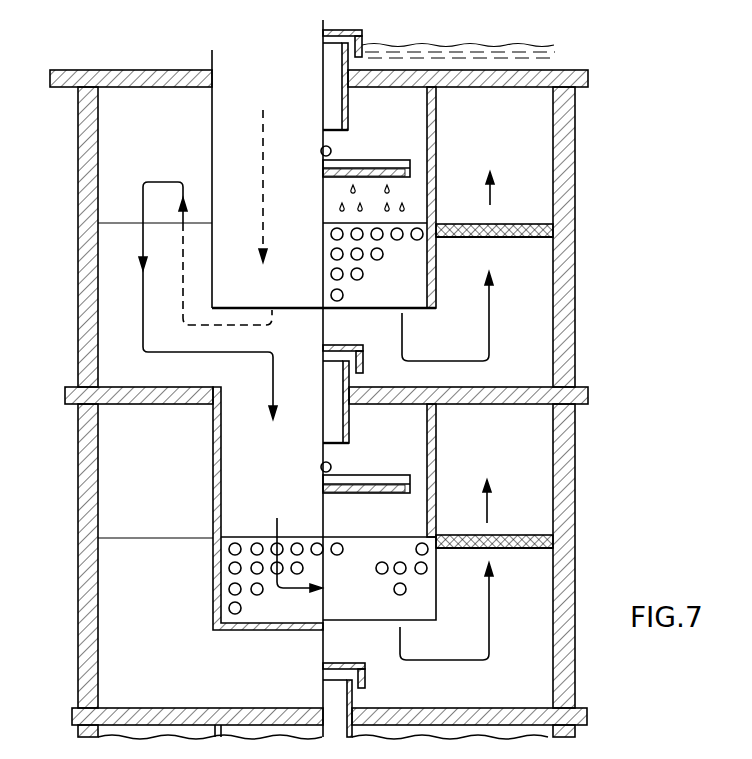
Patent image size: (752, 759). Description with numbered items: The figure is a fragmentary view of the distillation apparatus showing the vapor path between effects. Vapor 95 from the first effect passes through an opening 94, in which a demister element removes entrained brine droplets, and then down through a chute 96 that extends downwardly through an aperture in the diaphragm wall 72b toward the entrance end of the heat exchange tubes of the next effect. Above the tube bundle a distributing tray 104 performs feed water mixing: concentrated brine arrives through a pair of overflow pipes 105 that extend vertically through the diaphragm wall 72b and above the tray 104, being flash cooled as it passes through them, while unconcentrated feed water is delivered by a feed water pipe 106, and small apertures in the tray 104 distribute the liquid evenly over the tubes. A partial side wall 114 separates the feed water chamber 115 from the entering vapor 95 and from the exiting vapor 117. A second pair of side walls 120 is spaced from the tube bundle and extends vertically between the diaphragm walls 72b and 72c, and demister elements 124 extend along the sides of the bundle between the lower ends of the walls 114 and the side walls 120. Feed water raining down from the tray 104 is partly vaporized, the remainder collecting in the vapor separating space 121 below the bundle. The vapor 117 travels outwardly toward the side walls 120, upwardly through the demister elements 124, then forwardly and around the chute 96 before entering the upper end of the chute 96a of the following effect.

The diaphragm wall 72b is at (588, 76).
The diaphragm wall 72c is at (590, 392).
The opening 94 is at (405, 208).
The vapor 95 is at (266, 216).
The chute 96 is at (212, 124).
The chute 96a is at (238, 394).
The distributing tray 104 is at (391, 163).
The overflow pipes 105 is at (349, 116).
The feed water pipe 106 is at (331, 148).
The partial side wall 114 is at (436, 152).
The feed water chamber 115 is at (412, 116).
The vapor 117 is at (165, 181).
The side walls 120 is at (78, 161).
The vapor separating space 121 is at (530, 366).
The demister elements 124 is at (554, 212).